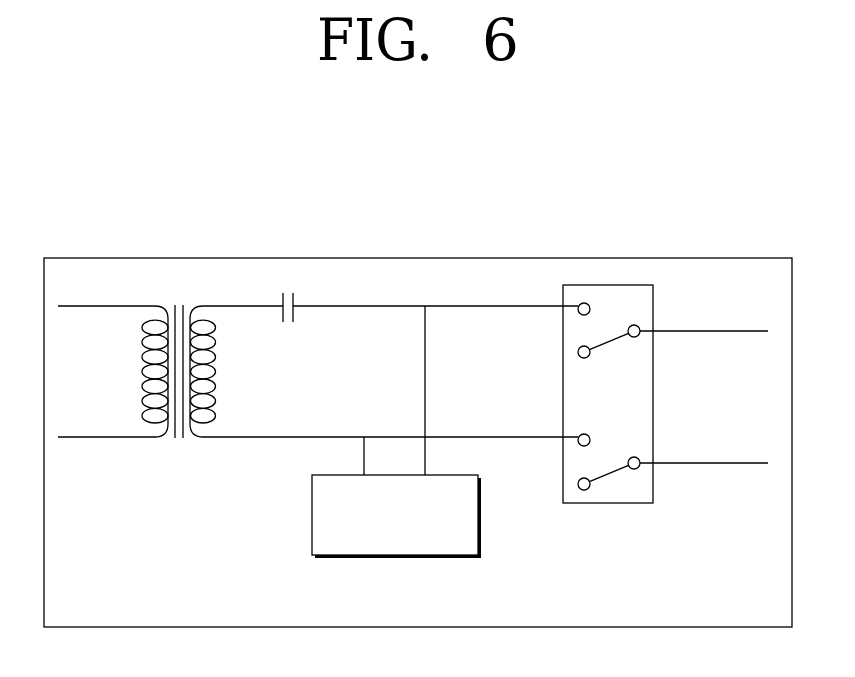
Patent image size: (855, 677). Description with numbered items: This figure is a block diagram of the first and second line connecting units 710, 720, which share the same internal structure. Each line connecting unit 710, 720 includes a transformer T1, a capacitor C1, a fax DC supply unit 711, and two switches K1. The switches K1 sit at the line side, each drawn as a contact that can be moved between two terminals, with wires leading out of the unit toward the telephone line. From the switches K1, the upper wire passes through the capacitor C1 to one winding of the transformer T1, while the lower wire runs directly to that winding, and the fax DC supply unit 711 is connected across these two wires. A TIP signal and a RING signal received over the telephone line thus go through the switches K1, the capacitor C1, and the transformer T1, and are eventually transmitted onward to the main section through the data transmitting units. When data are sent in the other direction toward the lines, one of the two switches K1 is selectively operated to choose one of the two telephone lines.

The first line connecting unit 710 is at (488, 258).
The second line connecting unit 720 is at (413, 443).
The fax DC supply unit 711 is at (410, 559).
The transformer T1 is at (318, 391).
The capacitor C1 is at (425, 291).
The switches K1 is at (665, 412).